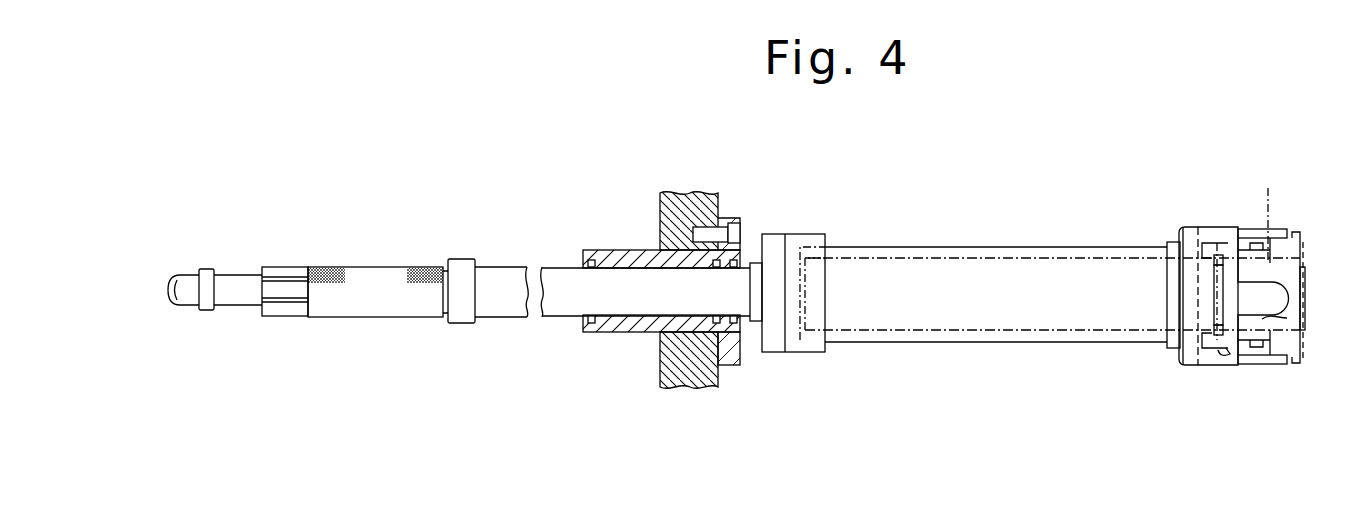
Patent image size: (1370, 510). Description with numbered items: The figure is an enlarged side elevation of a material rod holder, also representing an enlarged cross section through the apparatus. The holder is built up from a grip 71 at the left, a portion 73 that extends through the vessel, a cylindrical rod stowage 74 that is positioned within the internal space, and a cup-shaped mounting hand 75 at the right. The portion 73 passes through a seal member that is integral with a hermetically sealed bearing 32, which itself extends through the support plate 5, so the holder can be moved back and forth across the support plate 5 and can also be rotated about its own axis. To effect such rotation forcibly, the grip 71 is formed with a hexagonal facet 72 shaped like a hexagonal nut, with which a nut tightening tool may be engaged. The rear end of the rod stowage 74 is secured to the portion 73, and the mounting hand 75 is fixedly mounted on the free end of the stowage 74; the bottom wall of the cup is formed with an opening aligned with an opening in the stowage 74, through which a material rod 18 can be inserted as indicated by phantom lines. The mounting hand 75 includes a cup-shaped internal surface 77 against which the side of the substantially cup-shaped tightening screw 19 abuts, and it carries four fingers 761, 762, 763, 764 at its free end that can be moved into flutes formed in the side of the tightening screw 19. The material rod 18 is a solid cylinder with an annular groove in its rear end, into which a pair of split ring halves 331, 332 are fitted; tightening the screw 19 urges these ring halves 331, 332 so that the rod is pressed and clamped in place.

The support plate 5 is at (688, 208).
The material rod 18 is at (1267, 213).
The tightening screw 19 is at (1265, 249).
The hermetically sealed bearing 32 is at (600, 250).
The grip 71 is at (386, 302).
The hexagonal facet 72 is at (290, 310).
The portion extending through the vessel 73 is at (566, 306).
The rod stowage 74 is at (1024, 247).
The mounting hand 75 is at (1197, 226).
The cup-shaped internal surface 77 is at (1231, 357).
The split ring half 331 is at (1218, 256).
The split ring half 332 is at (1218, 335).
The finger 761 is at (1282, 229).
The finger 762 is at (1275, 286).
The finger 763 is at (1276, 365).
The finger 764 is at (1270, 319).